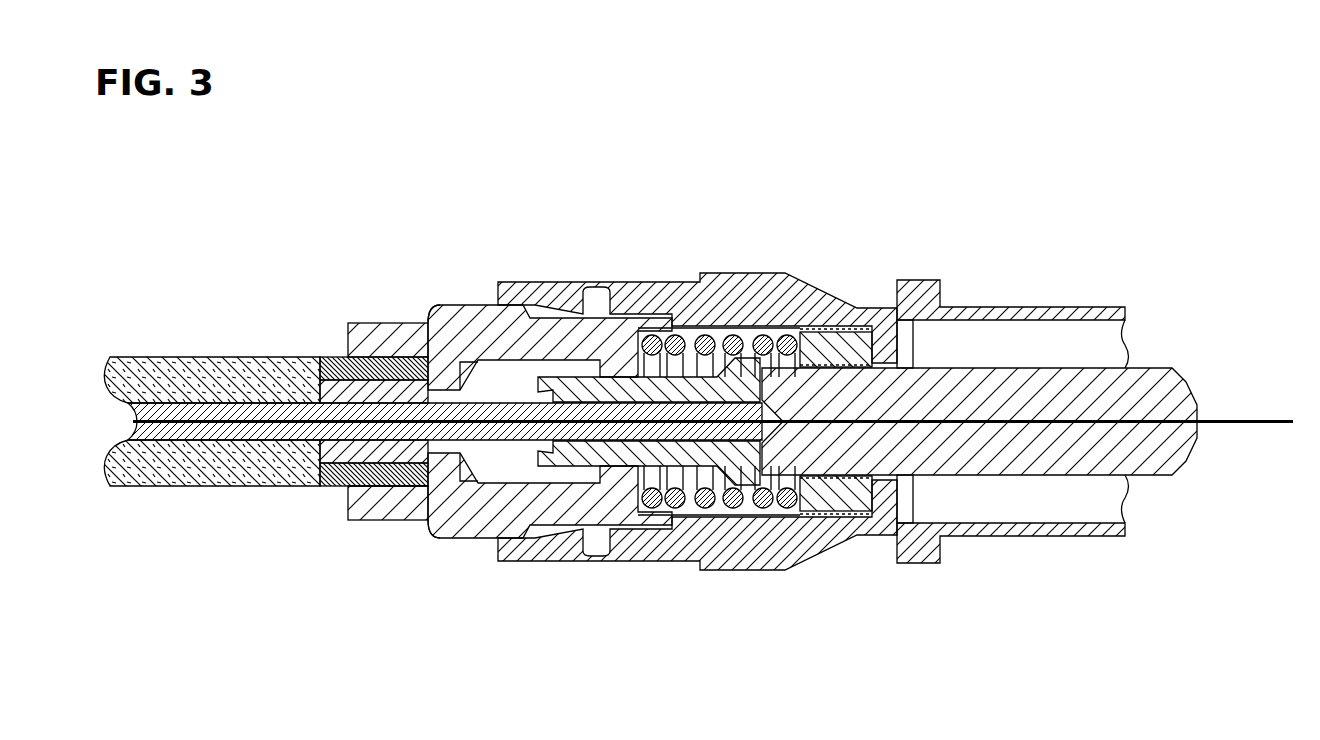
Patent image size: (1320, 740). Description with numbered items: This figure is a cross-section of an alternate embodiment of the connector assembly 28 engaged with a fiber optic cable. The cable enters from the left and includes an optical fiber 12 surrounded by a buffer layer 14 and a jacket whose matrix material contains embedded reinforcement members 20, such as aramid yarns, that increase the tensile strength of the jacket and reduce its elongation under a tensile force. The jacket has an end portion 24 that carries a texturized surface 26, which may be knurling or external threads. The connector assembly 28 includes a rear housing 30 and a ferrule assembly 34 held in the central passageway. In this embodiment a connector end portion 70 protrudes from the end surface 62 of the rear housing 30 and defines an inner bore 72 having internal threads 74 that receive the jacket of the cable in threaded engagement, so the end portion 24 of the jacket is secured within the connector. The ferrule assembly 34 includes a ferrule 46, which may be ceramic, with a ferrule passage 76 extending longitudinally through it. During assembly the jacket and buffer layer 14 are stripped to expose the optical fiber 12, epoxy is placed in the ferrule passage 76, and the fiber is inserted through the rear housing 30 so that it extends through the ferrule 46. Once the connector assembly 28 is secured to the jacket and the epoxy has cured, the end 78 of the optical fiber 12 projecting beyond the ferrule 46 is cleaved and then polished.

The optical fiber 12 is at (157, 423).
The buffer layer 14 is at (493, 433).
The reinforcement members 20 is at (233, 357).
The end portion 24 is at (406, 497).
The texturized surface 26 is at (385, 357).
The connector assembly 28 is at (815, 233).
The rear housing 30 is at (466, 305).
The ferrule assembly 34 is at (976, 353).
The ferrule 46 is at (1137, 475).
The end surface 62 is at (430, 320).
The connector end portion 70 is at (362, 323).
The inner bore 72 is at (322, 470).
The internal threads 74 is at (370, 357).
The ferrule passage 76 is at (1182, 417).
The end 78 is at (1247, 418).